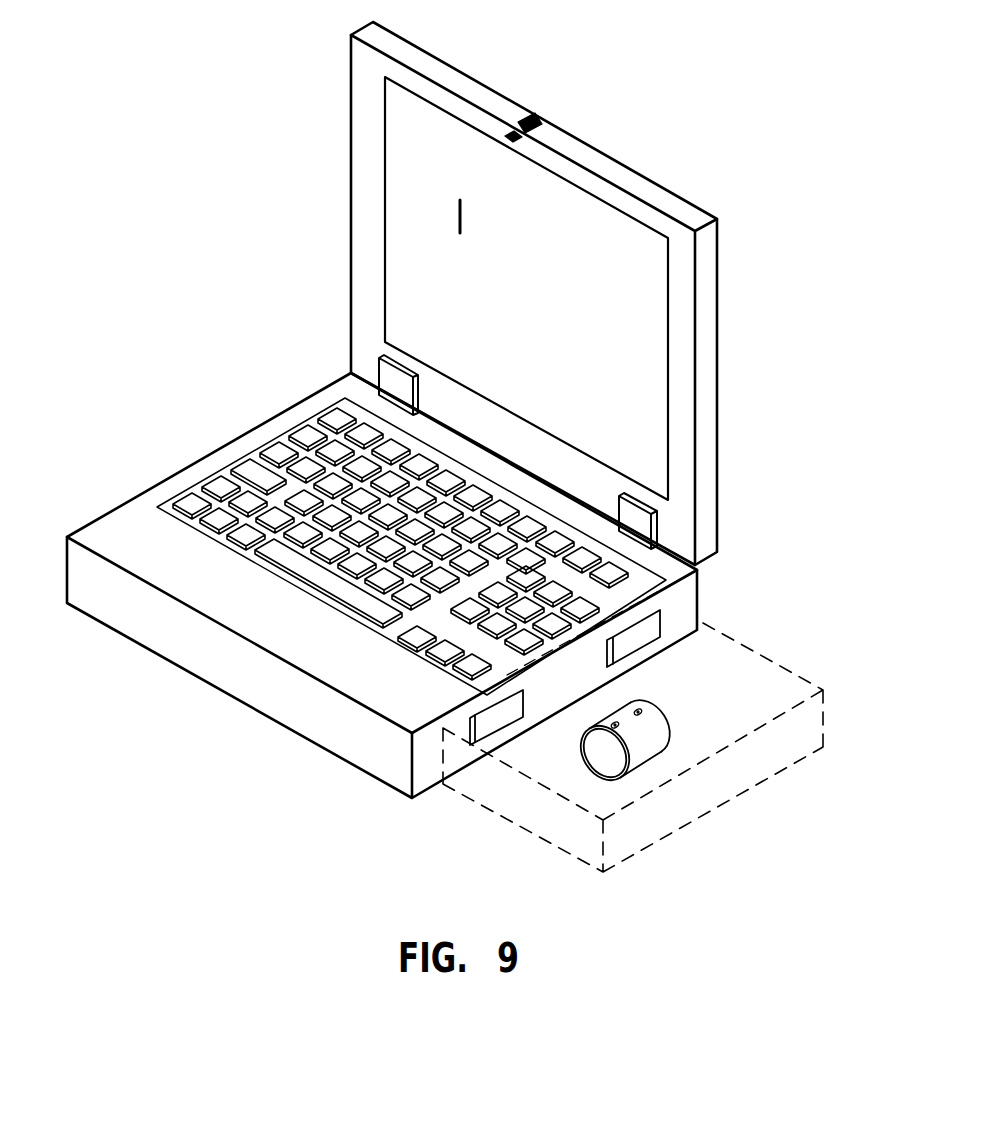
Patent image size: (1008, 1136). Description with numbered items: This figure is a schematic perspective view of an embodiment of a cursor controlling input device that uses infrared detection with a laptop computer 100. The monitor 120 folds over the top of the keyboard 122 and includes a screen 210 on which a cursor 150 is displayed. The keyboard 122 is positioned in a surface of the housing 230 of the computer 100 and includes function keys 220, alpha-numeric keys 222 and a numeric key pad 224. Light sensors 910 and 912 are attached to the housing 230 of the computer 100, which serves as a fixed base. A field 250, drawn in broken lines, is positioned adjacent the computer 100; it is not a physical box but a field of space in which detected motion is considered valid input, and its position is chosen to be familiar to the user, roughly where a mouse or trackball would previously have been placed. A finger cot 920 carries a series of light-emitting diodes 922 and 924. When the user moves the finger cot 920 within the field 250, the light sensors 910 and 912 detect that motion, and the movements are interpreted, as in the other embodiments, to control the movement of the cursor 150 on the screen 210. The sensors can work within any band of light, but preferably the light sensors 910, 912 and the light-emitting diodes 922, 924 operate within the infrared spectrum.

The computer 100 is at (823, 258).
The monitor 120 is at (360, 193).
The keyboard 122 is at (250, 446).
The cursor 150 is at (462, 208).
The screen 210 is at (640, 363).
The function keys 220 is at (342, 420).
The alpha-numeric keys 222 is at (386, 546).
The numeric key pad 224 is at (492, 628).
The housing 230 is at (98, 602).
The field 250 is at (737, 763).
The light sensor 910 is at (650, 633).
The light sensor 912 is at (497, 722).
The finger cot 920 is at (653, 747).
The light-emitting diode 922 is at (640, 712).
The light-emitting diode 924 is at (610, 725).